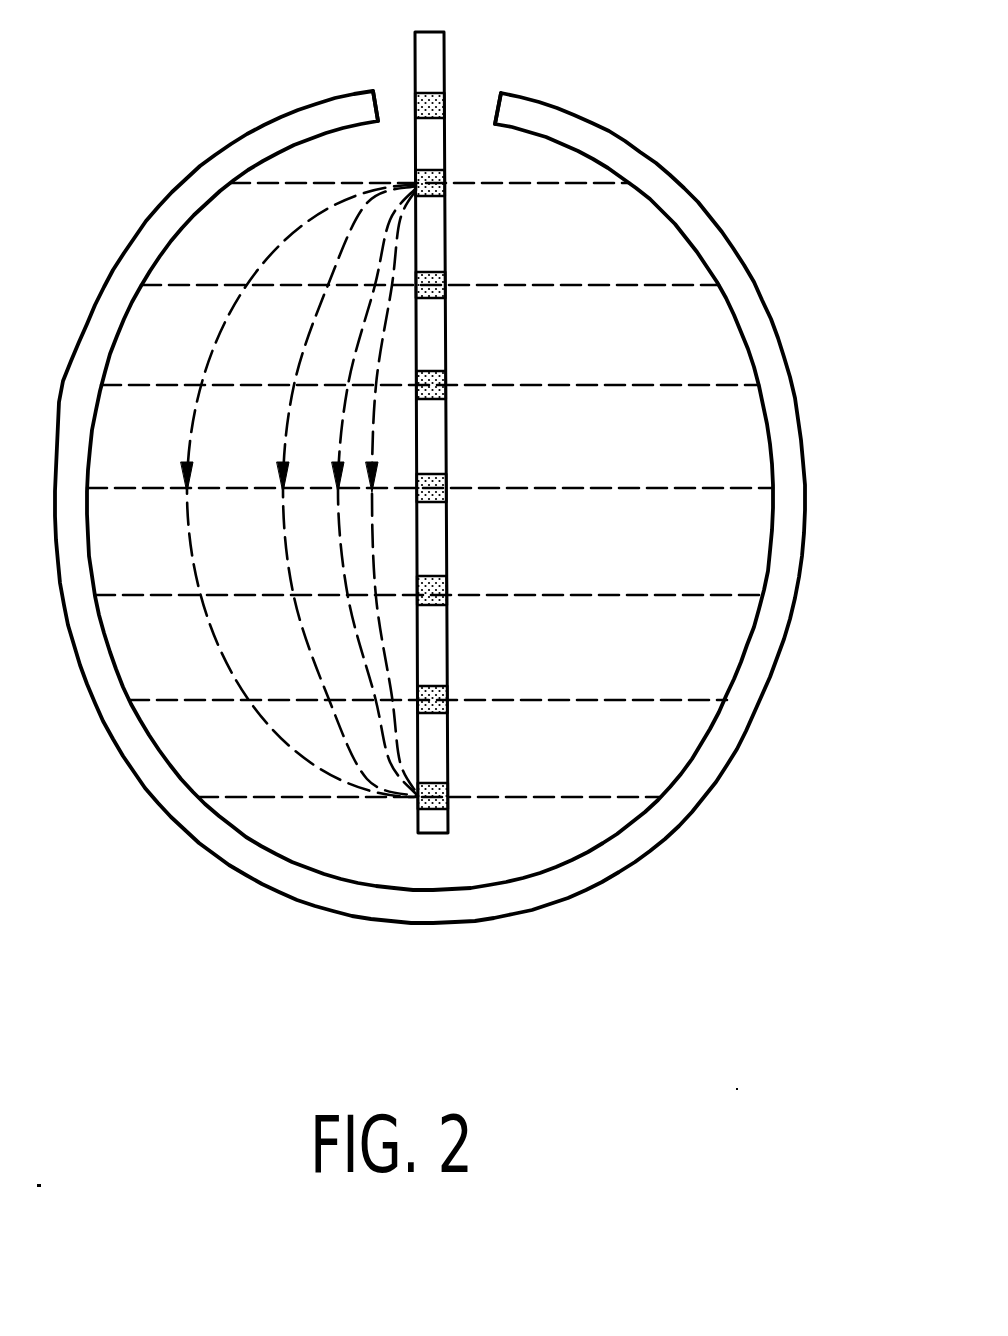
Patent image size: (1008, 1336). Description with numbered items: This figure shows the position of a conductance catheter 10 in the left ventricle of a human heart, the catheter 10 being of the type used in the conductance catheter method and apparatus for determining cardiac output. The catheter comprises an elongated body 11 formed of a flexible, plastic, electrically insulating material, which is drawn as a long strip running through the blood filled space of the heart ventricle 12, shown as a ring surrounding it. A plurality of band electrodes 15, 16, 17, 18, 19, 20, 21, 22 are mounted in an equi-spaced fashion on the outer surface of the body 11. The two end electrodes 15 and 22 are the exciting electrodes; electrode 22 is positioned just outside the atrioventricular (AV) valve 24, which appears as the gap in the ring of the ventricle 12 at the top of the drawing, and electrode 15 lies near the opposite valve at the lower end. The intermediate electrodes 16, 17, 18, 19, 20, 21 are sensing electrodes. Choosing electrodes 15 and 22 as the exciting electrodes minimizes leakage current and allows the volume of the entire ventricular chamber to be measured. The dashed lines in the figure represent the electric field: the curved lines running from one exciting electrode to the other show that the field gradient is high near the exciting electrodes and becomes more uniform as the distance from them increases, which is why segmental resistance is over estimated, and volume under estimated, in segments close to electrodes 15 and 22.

The conductance catheter 10 is at (498, 443).
The elongated body 11 is at (432, 541).
The heart ventricle 12 is at (798, 531).
The exciting electrode 15 is at (440, 800).
The sensing electrode 16 is at (446, 715).
The sensing electrode 17 is at (440, 600).
The sensing electrode 18 is at (440, 488).
The sensing electrode 19 is at (446, 381).
The sensing electrode 20 is at (446, 290).
The sensing electrode 21 is at (444, 186).
The exciting electrode 22 is at (442, 98).
The atrioventricular (AV) valve 24 is at (392, 84).